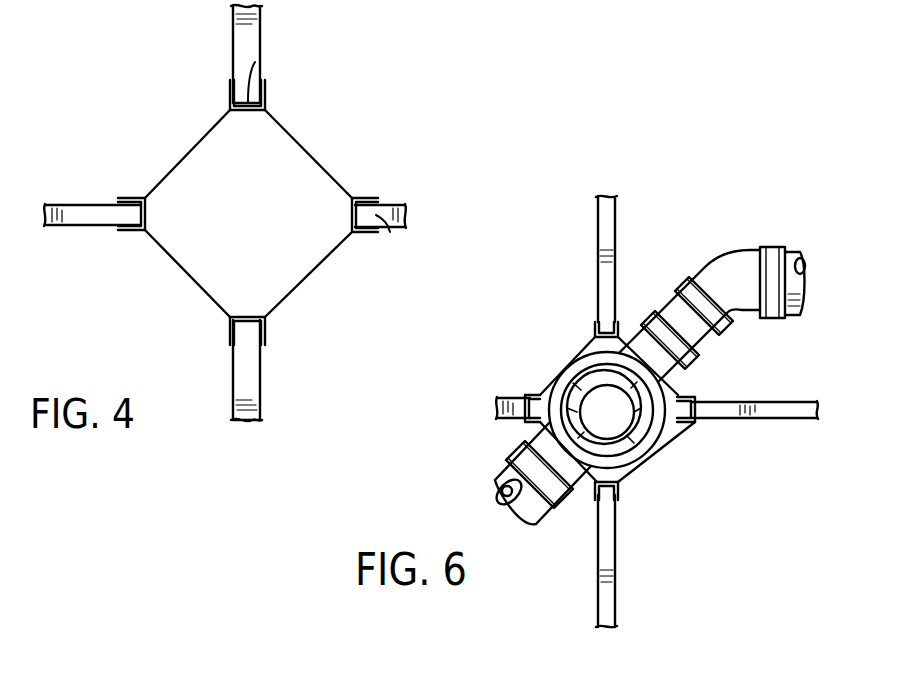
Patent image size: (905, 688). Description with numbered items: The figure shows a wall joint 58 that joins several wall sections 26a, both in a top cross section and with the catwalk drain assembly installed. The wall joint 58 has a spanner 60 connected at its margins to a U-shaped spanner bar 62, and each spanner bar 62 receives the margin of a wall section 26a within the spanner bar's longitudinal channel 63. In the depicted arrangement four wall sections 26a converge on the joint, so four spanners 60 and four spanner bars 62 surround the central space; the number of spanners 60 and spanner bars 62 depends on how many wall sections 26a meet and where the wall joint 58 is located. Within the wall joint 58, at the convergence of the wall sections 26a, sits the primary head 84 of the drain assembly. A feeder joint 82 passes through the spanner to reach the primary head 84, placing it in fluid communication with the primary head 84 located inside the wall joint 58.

In FIG. 4, the wall section 26a is at (233, 33).
In FIG. 6, the wall section 26a is at (598, 232).
In FIG. 4, the wall joint 58 is at (148, 114).
In FIG. 6, the wall joint 58 is at (533, 380).
In FIG. 4, the spanner 60 is at (214, 132).
In FIG. 6, the spanner 60 is at (585, 353).
In FIG. 4, the spanner bar 62 is at (275, 93).
In FIG. 6, the spanner bar 62 is at (696, 392).
In FIG. 4, the longitudinal channel 63 is at (255, 62).
In FIG. 6, the feeder joint 82 is at (736, 262).
In FIG. 6, the primary head 84 is at (572, 370).